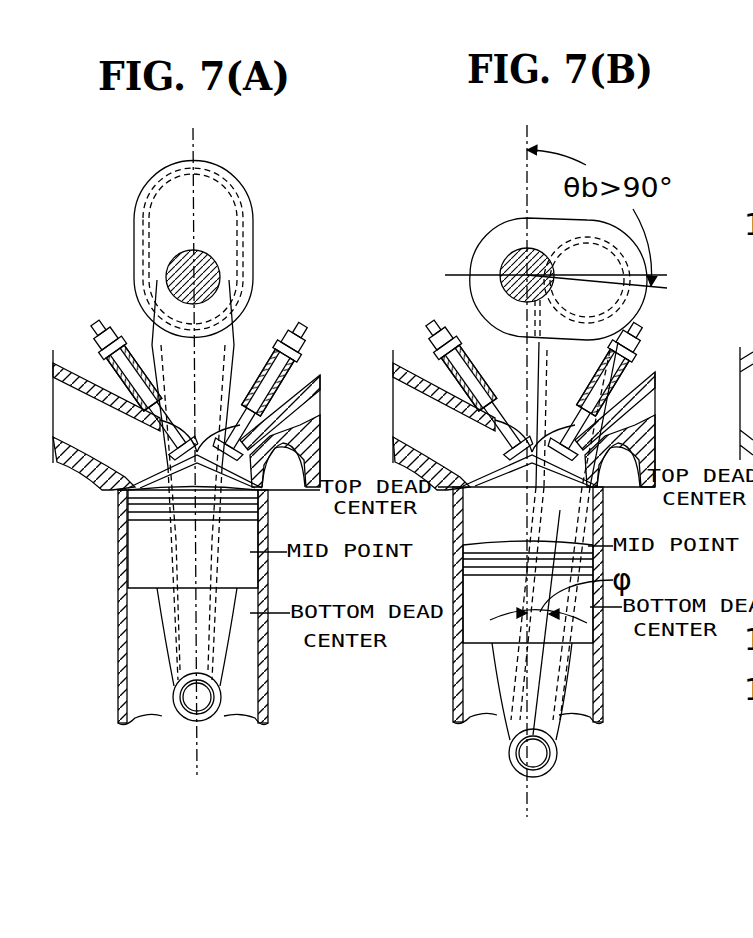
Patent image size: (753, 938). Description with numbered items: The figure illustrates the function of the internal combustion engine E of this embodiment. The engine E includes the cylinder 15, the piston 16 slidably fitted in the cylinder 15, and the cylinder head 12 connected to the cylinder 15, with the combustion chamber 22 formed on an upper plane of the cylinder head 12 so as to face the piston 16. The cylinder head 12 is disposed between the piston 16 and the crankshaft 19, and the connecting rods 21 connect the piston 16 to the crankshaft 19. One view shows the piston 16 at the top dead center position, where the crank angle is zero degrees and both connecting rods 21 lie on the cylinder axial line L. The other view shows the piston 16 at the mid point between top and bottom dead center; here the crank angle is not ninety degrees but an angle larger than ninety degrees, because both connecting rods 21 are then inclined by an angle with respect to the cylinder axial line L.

In FIG. 7A, the cylinder head 12 is at (74, 463).
In FIG. 7B, the cylinder head 12 is at (410, 347).
In FIG. 7A, the cylinder 15 is at (127, 632).
In FIG. 7B, the cylinder 15 is at (463, 688).
In FIG. 7A, the piston 16 is at (145, 550).
In FIG. 7B, the piston 16 is at (470, 618).
In FIG. 7A, the crankshaft 19 is at (218, 277).
In FIG. 7B, the crankshaft 19 is at (511, 258).
In FIG. 7A, the connecting rods 21 is at (228, 355).
In FIG. 7B, the connecting rods 21 is at (547, 390).
In FIG. 7A, the combustion chamber 22 is at (320, 418).
In FIG. 7B, the combustion chamber 22 is at (657, 425).
In FIG. 7A, the internal combustion engine E is at (271, 232).
In FIG. 7B, the internal combustion engine E is at (672, 228).
In FIG. 7A, the cylinder axial line L is at (200, 740).
In FIG. 7B, the cylinder axial line L is at (535, 787).